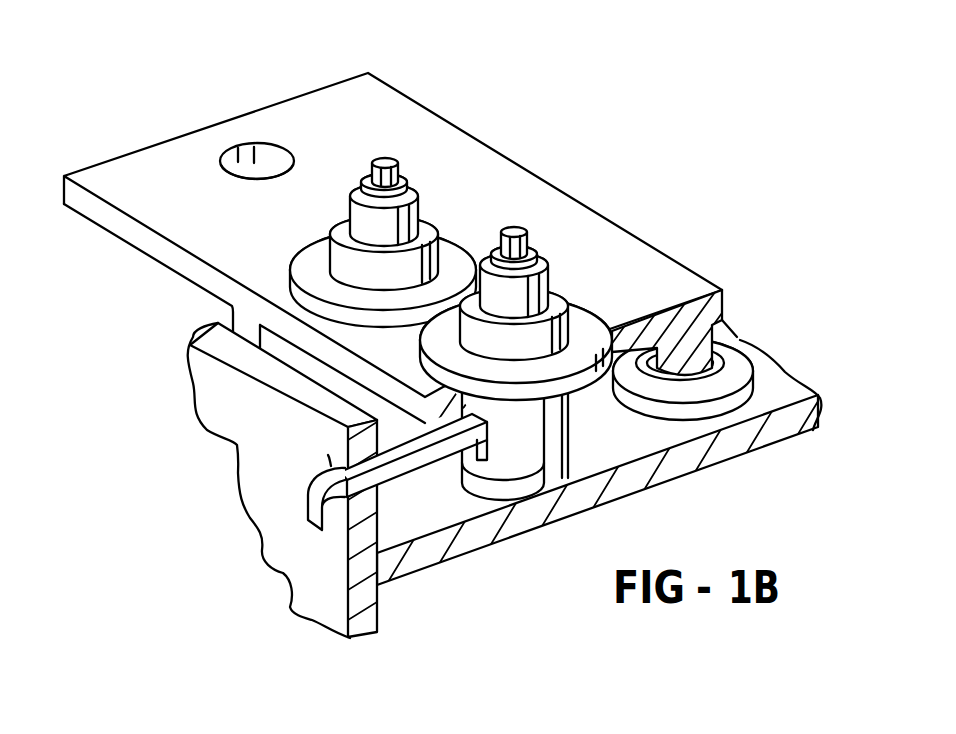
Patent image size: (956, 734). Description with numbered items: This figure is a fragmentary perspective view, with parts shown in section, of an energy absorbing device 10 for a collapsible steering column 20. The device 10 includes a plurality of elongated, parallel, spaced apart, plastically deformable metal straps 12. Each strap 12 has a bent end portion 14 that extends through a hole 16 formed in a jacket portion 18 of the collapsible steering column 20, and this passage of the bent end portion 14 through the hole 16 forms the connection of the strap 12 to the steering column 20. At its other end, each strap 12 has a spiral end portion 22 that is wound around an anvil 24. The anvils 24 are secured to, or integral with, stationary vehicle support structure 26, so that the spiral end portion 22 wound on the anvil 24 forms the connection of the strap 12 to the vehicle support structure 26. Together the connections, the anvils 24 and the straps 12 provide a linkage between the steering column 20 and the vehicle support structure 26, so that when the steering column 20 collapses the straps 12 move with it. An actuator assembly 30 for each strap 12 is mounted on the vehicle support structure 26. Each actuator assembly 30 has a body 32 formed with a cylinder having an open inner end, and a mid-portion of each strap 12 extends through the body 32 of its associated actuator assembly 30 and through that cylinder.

The energy absorbing device 10 is at (693, 141).
The metal strap 12 is at (433, 457).
The bent end portion 14 is at (317, 508).
The hole 16 is at (328, 455).
The jacket portion 18 is at (327, 603).
The collapsible steering column 20 is at (213, 399).
The spiral end portion 22 is at (747, 367).
The anvil 24 is at (690, 354).
The stationary vehicle support structure 26 is at (376, 96).
The actuator assembly 30 is at (427, 207).
The body 32 is at (326, 261).